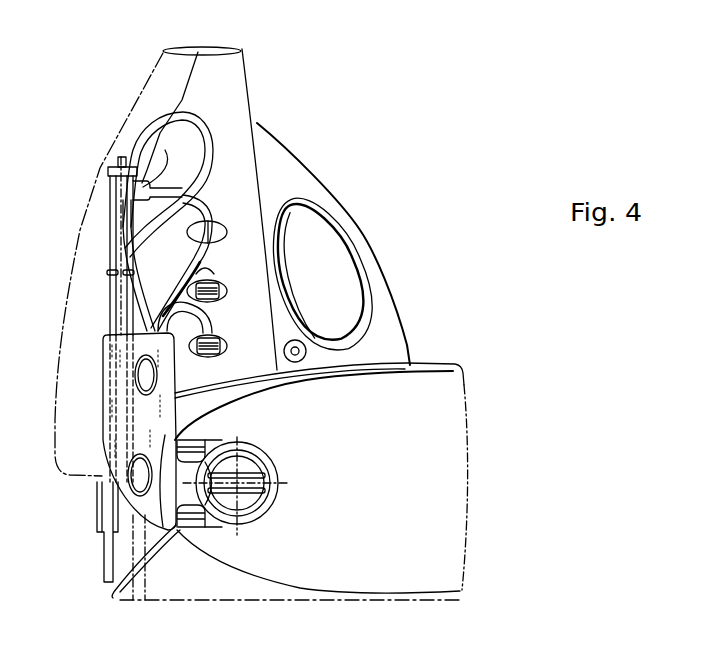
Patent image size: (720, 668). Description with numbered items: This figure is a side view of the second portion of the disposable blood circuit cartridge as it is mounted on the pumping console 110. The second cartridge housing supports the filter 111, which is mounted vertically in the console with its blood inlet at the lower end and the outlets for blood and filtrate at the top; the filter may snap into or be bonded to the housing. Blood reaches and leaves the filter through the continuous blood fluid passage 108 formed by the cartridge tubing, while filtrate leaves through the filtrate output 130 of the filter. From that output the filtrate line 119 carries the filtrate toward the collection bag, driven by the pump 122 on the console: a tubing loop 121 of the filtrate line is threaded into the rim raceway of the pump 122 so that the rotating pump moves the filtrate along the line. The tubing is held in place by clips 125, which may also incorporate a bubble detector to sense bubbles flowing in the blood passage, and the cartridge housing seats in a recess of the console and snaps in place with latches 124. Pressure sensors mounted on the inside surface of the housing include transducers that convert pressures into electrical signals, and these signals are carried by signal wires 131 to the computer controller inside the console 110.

The continuous blood fluid passage 108 is at (207, 123).
The pumping console 110 is at (434, 425).
The filter 111 is at (108, 205).
The filtrate line 119 is at (173, 283).
The tubing loop 121 is at (268, 512).
The pump 122 is at (245, 498).
The latches 124 is at (195, 532).
The clips 125 is at (225, 223).
The filtrate output 130 is at (165, 150).
The signal wires 131 is at (213, 325).